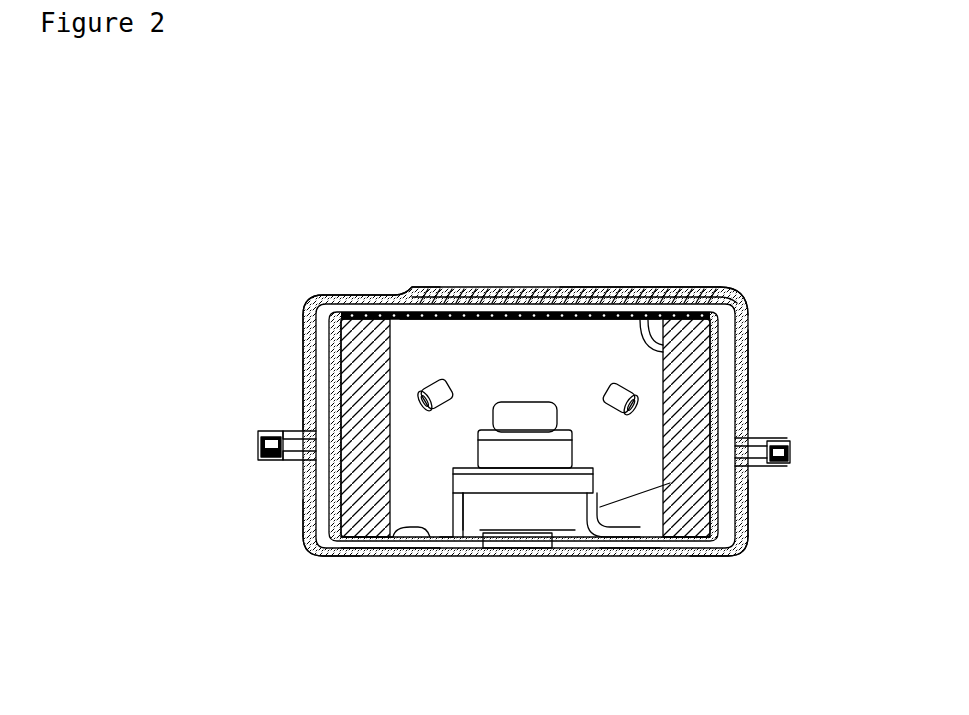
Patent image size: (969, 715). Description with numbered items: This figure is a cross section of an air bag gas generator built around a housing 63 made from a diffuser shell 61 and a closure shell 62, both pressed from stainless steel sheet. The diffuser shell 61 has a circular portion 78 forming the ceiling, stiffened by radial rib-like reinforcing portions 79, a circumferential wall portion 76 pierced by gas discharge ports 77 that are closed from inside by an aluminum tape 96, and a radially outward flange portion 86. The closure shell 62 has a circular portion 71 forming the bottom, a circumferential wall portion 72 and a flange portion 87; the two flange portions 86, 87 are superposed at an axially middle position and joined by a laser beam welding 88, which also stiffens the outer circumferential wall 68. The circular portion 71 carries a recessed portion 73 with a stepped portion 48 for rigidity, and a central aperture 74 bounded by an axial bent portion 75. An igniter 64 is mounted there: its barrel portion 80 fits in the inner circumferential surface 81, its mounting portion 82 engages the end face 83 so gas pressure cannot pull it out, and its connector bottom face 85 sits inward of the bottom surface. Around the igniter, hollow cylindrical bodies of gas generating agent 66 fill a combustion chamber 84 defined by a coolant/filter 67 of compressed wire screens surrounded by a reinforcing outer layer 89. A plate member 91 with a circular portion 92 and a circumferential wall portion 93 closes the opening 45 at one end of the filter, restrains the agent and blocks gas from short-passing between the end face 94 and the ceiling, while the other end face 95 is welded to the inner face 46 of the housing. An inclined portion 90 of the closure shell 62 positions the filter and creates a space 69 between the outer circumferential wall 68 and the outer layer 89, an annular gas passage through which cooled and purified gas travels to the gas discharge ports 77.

The opening 45 is at (704, 298).
The inner face of the housing 46 is at (679, 584).
The stepped portion 48 is at (390, 585).
The diffuser shell 61 is at (733, 366).
The closure shell 62 is at (525, 476).
The housing 63 is at (653, 257).
The igniter 64 is at (497, 550).
The gas generating agent 66 is at (528, 304).
The coolant/filter 67 is at (631, 610).
The outer circumferential wall 68 is at (752, 379).
The space 69 is at (774, 278).
The circular portion 71 is at (303, 600).
The circumferential wall portion 72 is at (446, 438).
The recessed portion 73 is at (415, 591).
The central aperture 74 is at (403, 619).
The axial bent portion 75 is at (795, 430).
The circumferential wall portion 76 is at (305, 350).
The gas discharge ports 77 is at (300, 305).
The circular portion 78 is at (363, 377).
The rib-like reinforcing portions 79 is at (425, 258).
The barrel portion 80 is at (536, 537).
The inner circumferential surface 81 is at (561, 554).
The mounting portion 82 is at (453, 481).
The end face 83 is at (564, 449).
The combustion chamber 84 is at (561, 356).
The connector bottom face 85 is at (517, 616).
The flange portion 86 is at (255, 403).
The flange portion 87 is at (265, 481).
The laser beam welding 88 is at (227, 449).
The outer layer 89 is at (787, 508).
The inclined portion 90 is at (265, 549).
The plate member 91 is at (557, 237).
The circular portion 92 is at (525, 256).
The circumferential wall portion 93 is at (681, 269).
The end face 94 is at (338, 231).
The other end face 95 is at (728, 584).
The aluminum tape 96 is at (293, 268).